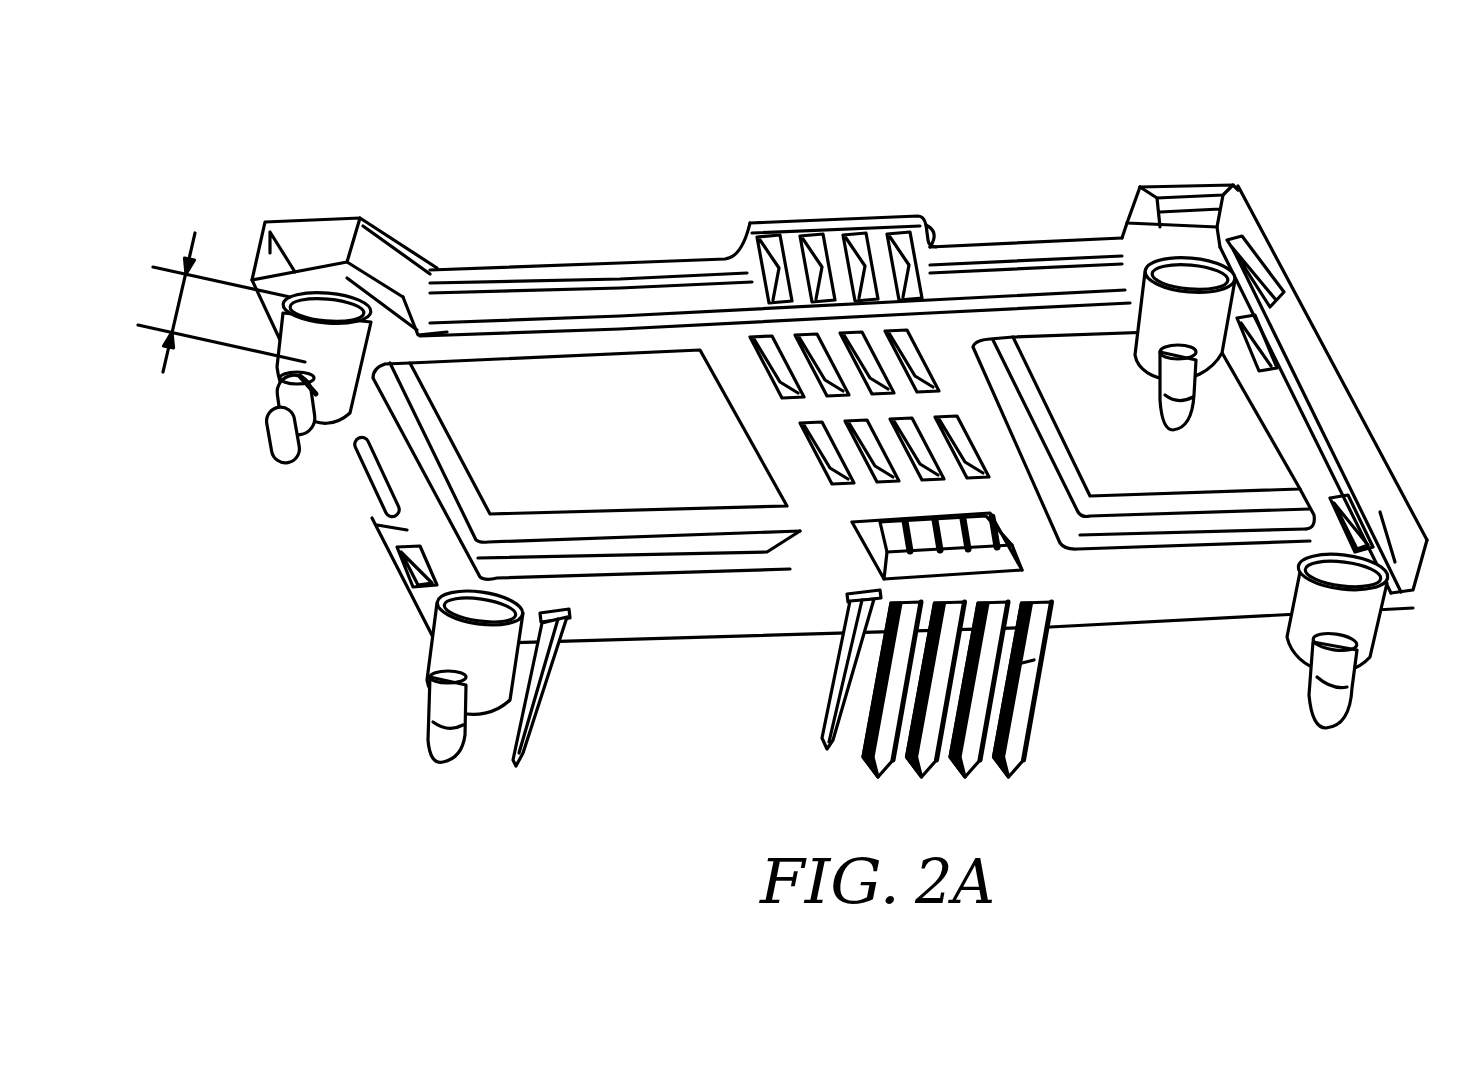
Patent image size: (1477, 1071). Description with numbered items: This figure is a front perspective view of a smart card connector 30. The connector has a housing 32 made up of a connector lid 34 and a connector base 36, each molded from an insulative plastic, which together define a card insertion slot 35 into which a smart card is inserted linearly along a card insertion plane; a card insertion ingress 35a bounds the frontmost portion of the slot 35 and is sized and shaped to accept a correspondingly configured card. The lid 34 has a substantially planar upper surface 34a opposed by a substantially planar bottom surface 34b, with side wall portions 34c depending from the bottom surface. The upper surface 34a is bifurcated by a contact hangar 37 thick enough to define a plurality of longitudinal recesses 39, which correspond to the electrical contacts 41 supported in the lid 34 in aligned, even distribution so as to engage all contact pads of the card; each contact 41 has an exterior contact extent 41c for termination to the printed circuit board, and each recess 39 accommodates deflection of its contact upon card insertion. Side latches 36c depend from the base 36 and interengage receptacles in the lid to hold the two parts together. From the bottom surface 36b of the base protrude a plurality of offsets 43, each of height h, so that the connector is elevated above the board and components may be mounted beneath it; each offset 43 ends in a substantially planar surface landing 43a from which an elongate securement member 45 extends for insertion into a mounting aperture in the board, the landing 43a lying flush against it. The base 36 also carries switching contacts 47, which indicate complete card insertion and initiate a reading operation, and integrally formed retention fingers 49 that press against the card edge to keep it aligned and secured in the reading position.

The smart card connector 30 is at (803, 412).
The housing 32 is at (323, 220).
The connector lid 34 is at (1344, 389).
The upper surface 34a is at (993, 247).
The bottom surface 34b is at (527, 298).
The side wall portions 34c is at (1265, 260).
The card insertion slot 35 is at (1073, 283).
The card insertion ingress 35a is at (1203, 210).
The connector base 36 is at (1170, 597).
The bottom surface 36b is at (377, 527).
The side latches 36c is at (1387, 487).
The contact hangar 37 is at (758, 232).
The longitudinal recesses 39 is at (812, 268).
The electrical contacts 41 is at (1020, 747).
The exterior contact extent 41c is at (1034, 660).
The offsets 43 is at (318, 365).
The surface landing 43a is at (267, 372).
The securement member 45 is at (287, 463).
The switching contacts 47 is at (832, 704).
The retention fingers 49 is at (367, 483).